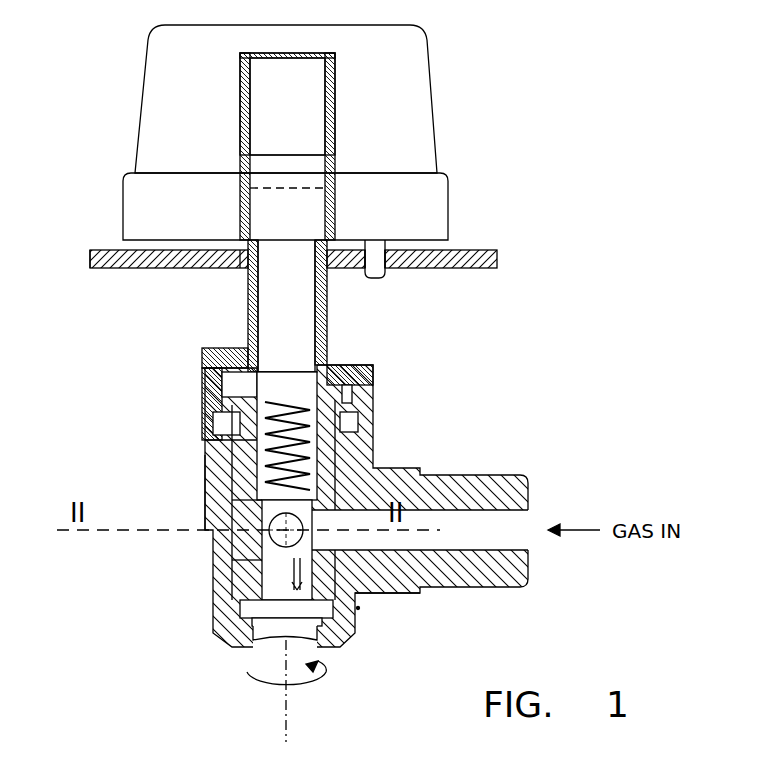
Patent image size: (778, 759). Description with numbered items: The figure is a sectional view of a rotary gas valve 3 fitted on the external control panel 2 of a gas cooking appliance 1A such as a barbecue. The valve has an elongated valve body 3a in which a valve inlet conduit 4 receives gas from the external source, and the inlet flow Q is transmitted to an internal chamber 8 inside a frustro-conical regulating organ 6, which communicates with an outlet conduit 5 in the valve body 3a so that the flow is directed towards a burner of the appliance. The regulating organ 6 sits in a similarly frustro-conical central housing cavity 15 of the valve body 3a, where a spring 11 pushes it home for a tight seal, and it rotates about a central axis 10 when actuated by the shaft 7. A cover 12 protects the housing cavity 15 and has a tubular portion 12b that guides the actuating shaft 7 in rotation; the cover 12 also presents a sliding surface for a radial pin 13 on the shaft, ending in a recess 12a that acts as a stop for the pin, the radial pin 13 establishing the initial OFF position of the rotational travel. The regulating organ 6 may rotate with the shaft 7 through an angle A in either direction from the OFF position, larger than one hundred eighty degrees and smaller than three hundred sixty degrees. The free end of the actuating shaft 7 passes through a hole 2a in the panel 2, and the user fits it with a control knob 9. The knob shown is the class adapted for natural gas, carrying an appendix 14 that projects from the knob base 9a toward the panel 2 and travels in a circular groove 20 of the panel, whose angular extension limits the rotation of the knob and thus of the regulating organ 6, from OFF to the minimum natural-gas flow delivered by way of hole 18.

The gas cooking appliance 1A is at (521, 134).
The control knob 9 is at (418, 103).
The knob base 9a is at (135, 203).
The actuating shaft 7 is at (275, 318).
The external control panel 2 is at (470, 246).
The hole 2a is at (247, 270).
The circular groove 20 is at (388, 270).
The appendix 14 is at (377, 280).
The valve 3 is at (451, 410).
The valve body 3a is at (205, 478).
The cover 12 is at (333, 362).
The recess 12a is at (200, 377).
The tubular portion 12b is at (322, 340).
The radial pin 13 is at (207, 395).
The spring 11 is at (205, 447).
The valve inlet conduit 4 is at (468, 512).
The regulating organ 6 is at (215, 505).
The outlet conduit 5 is at (212, 545).
The central housing cavity 15 is at (213, 586).
The internal chamber 8 is at (218, 605).
The hole 18 is at (403, 594).
The inlet flow Q is at (358, 608).
The rotation angle A is at (296, 671).
The central axis 10 is at (288, 712).